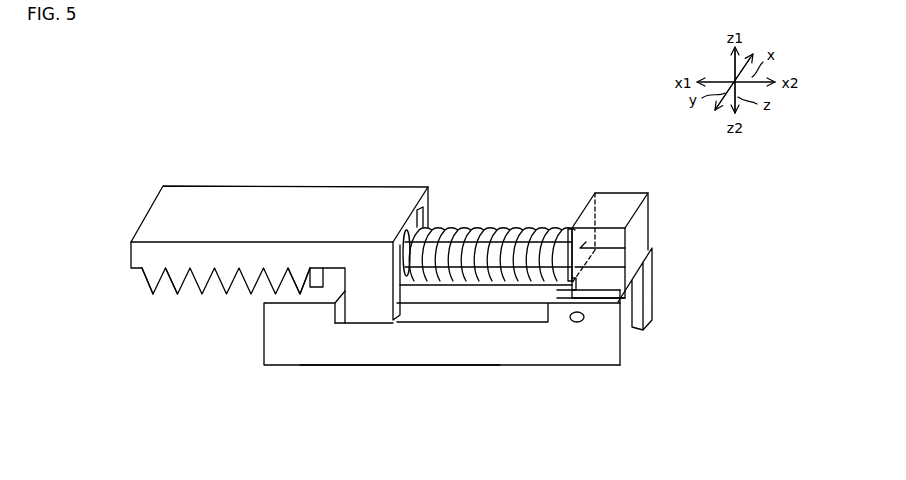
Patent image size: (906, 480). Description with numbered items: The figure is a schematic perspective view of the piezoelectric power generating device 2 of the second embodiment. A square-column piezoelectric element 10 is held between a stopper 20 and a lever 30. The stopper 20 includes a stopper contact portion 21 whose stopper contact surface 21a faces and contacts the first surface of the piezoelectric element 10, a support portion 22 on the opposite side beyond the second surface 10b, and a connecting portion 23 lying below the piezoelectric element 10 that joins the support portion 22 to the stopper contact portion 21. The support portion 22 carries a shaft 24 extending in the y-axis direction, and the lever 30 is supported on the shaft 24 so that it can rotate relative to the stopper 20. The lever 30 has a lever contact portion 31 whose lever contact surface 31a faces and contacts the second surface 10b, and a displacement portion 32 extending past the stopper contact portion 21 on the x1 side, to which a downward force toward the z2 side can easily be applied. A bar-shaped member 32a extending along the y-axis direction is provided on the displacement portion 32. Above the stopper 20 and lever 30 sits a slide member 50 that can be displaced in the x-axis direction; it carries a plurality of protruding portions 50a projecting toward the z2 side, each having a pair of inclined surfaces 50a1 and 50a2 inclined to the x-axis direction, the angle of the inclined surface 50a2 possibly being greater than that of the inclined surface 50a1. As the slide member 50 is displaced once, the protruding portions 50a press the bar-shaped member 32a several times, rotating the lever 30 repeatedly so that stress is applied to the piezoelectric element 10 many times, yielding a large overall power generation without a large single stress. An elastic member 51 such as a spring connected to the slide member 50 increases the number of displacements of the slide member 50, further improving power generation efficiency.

The piezoelectric power generating device 2 is at (580, 146).
The piezoelectric element 10 is at (500, 307).
The second surface 10b is at (574, 294).
The stopper 20 is at (468, 368).
The stopper contact portion 21 is at (260, 360).
The stopper contact surface 21a is at (341, 313).
The support portion 22 is at (655, 287).
The connecting portion 23 is at (420, 370).
The shaft 24 is at (582, 323).
The lever 30 is at (329, 272).
The lever contact portion 31 is at (573, 292).
The lever contact surface 31a is at (566, 290).
The displacement portion 32 is at (313, 292).
The bar-shaped member 32a is at (291, 292).
The slide member 50 is at (319, 184).
The protruding portions 50a is at (157, 298).
The inclined surface 50a1 is at (145, 277).
The inclined surface 50a2 is at (182, 288).
The elastic member 51 is at (491, 226).